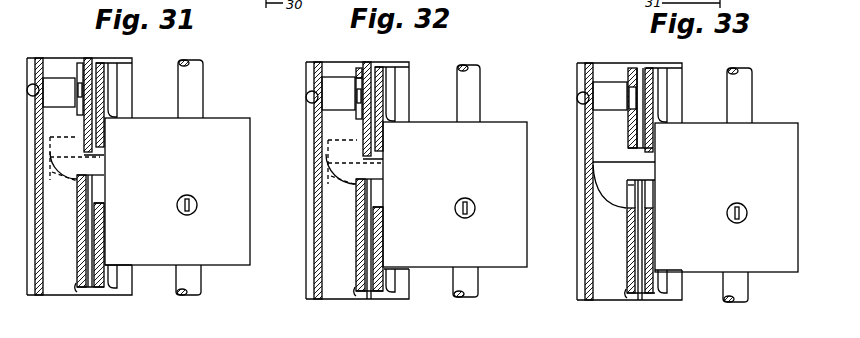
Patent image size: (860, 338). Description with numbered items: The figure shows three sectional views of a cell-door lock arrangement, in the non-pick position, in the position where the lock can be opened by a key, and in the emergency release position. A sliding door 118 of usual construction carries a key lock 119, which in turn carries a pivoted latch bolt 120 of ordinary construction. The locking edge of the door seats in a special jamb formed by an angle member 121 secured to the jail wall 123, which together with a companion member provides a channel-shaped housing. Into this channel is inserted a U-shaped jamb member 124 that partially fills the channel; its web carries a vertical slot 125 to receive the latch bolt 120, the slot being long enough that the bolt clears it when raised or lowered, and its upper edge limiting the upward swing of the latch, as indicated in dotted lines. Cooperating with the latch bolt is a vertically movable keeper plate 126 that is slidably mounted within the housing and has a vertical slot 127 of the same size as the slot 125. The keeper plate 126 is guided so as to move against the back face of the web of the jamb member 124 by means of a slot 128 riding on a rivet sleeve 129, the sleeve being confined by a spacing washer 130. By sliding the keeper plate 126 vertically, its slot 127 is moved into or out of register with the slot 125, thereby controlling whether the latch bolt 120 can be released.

In FIG. 31, the sliding door 118 is at (100, 82).
In FIG. 32, the sliding door 118 is at (399, 179).
In FIG. 33, the sliding door 118 is at (672, 180).
In FIG. 31, the key lock 119 is at (227, 130).
In FIG. 32, the key lock 119 is at (455, 181).
In FIG. 33, the key lock 119 is at (726, 185).
In FIG. 31, the latch bolt 120 is at (55, 175).
In FIG. 32, the latch bolt 120 is at (313, 174).
In FIG. 33, the latch bolt 120 is at (583, 186).
In FIG. 31, the angle member 121 is at (38, 294).
In FIG. 32, the angle member 121 is at (337, 180).
In FIG. 33, the angle member 121 is at (611, 181).
In FIG. 31, the jail wall 123 is at (27, 282).
In FIG. 32, the jail wall 123 is at (288, 180).
In FIG. 33, the jail wall 123 is at (557, 181).
In FIG. 32, the U-shaped jamb member 124 is at (397, 311).
In FIG. 33, the U-shaped jamb member 124 is at (652, 312).
In FIG. 31, the vertical slot 125 is at (88, 193).
In FIG. 32, the vertical slot 125 is at (391, 234).
In FIG. 33, the vertical slot 125 is at (662, 235).
In FIG. 31, the keeper plate 126 is at (74, 282).
In FIG. 32, the keeper plate 126 is at (338, 309).
In FIG. 33, the keeper plate 126 is at (594, 312).
In FIG. 31, the vertical slot 127 is at (82, 128).
In FIG. 32, the vertical slot 127 is at (380, 157).
In FIG. 33, the vertical slot 127 is at (662, 200).
In FIG. 32, the slot 128 is at (335, 60).
In FIG. 33, the slot 128 is at (616, 120).
In FIG. 31, the rivet sleeve 129 is at (78, 90).
In FIG. 32, the rivet sleeve 129 is at (401, 109).
In FIG. 33, the rivet sleeve 129 is at (620, 96).
In FIG. 31, the spacing washer 130 is at (50, 86).
In FIG. 32, the spacing washer 130 is at (312, 90).
In FIG. 33, the spacing washer 130 is at (596, 117).